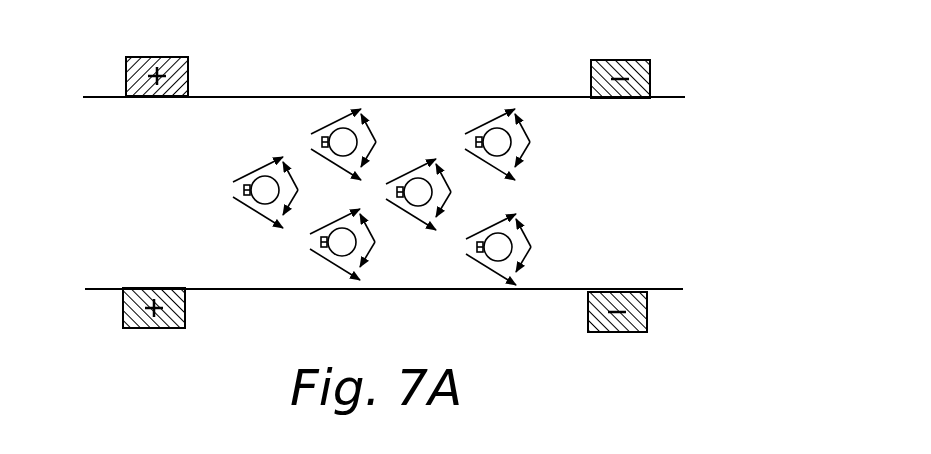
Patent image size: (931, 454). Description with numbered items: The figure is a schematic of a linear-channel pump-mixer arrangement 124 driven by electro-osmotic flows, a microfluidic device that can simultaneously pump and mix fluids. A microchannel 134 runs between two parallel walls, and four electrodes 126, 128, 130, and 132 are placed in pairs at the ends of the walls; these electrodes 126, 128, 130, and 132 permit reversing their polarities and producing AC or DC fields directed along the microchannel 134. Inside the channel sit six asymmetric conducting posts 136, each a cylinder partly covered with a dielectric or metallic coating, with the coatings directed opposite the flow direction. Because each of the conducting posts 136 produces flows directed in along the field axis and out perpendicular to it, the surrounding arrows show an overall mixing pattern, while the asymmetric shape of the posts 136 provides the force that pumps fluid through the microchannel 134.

The pump-mixer arrangement 124 is at (408, 94).
The electrode 126 is at (126, 68).
The electrode 128 is at (620, 60).
The electrode 130 is at (123, 305).
The electrode 132 is at (647, 313).
The microchannel 134 is at (678, 128).
The asymmetric conducting posts 136 is at (513, 143).